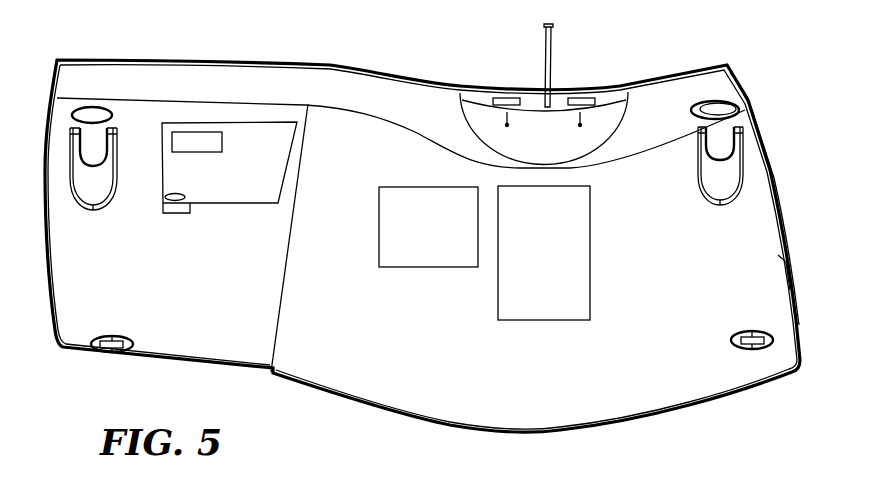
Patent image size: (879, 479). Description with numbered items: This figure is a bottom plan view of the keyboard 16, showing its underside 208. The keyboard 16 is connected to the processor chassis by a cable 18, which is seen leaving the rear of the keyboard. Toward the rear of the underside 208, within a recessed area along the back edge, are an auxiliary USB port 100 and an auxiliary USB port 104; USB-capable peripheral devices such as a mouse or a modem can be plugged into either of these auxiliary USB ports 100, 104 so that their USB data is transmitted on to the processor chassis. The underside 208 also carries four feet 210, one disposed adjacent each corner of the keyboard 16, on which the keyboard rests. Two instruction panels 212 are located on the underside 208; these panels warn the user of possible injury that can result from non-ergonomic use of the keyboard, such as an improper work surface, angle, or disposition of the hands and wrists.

The keyboard 16 is at (712, 393).
The cable 18 is at (552, 38).
The auxiliary USB port 100 is at (593, 92).
The auxiliary USB port 104 is at (502, 90).
The underside 208 is at (328, 238).
The feet 210 is at (100, 113).
The instruction panels 212 is at (379, 243).